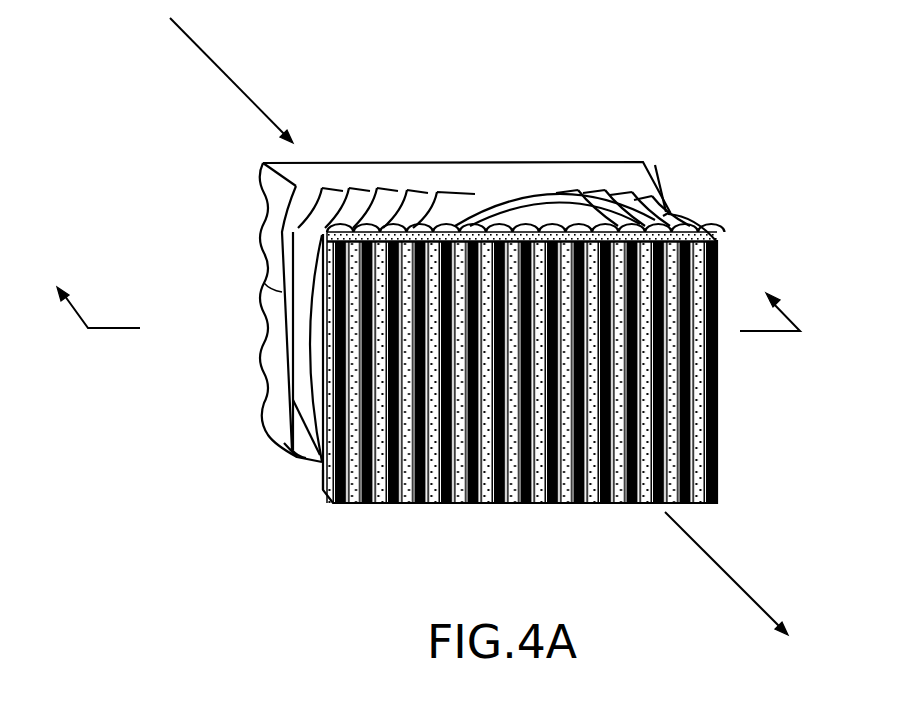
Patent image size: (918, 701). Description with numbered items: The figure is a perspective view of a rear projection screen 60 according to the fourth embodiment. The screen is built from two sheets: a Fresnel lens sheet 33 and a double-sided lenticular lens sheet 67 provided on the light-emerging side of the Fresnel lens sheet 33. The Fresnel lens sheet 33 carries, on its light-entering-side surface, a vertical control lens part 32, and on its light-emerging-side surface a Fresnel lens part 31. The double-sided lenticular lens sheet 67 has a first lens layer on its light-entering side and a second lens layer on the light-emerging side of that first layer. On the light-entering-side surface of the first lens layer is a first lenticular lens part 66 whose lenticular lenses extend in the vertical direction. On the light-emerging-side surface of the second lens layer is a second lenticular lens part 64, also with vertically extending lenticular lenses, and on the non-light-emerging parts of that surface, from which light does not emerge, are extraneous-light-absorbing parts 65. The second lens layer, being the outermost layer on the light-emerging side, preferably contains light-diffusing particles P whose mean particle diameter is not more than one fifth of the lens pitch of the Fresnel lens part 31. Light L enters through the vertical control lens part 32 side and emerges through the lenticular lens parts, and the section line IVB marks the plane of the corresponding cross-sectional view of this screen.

The rear projection screen 60 is at (498, 320).
The double-sided lenticular lens sheet 67 is at (596, 341).
The first lenticular lens part 66 is at (690, 225).
The second lenticular lens part 64 is at (718, 251).
The extraneous-light-absorbing parts 65 is at (563, 367).
The Fresnel lens sheet 33 is at (213, 301).
The vertical control lens part 32 is at (266, 287).
The Fresnel lens part 31 is at (300, 328).
The light-diffusing particles P is at (326, 490).
The light L is at (206, 53).
The section line IVB is at (434, 314).